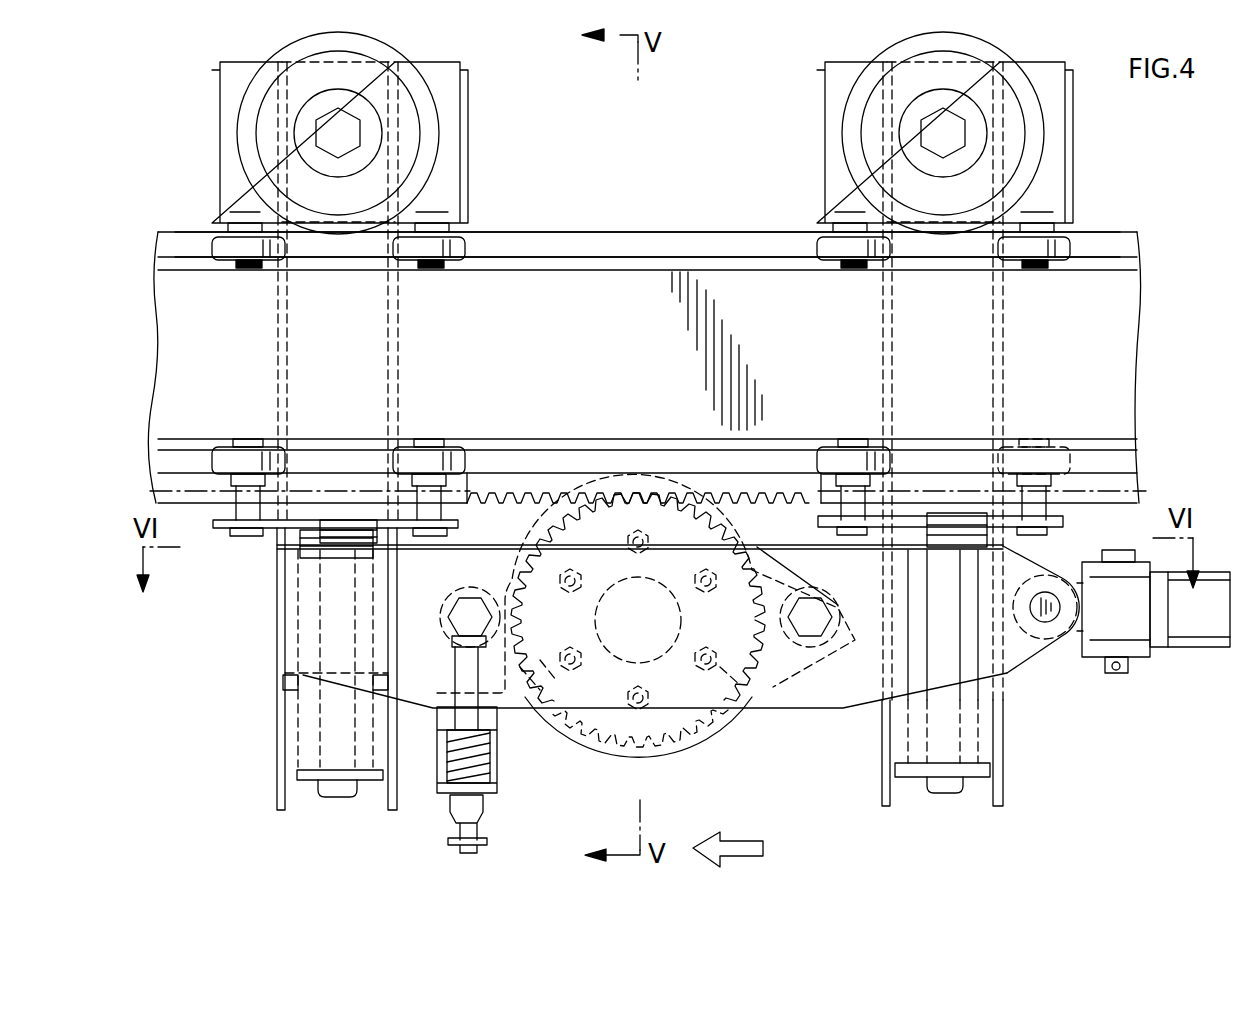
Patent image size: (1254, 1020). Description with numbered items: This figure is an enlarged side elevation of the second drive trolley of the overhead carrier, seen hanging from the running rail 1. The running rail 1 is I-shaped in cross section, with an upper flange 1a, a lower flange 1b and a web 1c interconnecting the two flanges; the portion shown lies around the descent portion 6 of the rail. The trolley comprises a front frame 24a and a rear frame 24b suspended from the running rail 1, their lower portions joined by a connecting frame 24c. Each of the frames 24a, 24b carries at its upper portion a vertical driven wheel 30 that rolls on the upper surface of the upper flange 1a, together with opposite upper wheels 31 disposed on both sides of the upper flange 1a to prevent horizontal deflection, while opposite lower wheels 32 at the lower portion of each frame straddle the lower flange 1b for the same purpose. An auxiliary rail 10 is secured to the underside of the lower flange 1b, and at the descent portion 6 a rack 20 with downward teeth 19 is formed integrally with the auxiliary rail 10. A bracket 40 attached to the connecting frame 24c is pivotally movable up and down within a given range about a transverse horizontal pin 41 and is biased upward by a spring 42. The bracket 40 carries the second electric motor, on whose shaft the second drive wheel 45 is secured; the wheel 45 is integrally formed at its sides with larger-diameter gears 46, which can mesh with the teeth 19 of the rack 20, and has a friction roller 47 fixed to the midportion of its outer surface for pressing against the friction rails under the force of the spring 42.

The running rail 1 is at (666, 339).
The upper flange 1a is at (1118, 238).
The lower flange 1b is at (1122, 457).
The web 1c is at (1127, 347).
The descent portion 6 is at (653, 367).
The auxiliary rail 10 is at (1116, 483).
The downward teeth 19 is at (643, 492).
The rack 20 is at (196, 507).
The front frame 24a is at (468, 97).
The rear frame 24b is at (1073, 115).
The connecting frame 24c is at (787, 700).
The vertical driven wheel 30 is at (433, 145).
The upper wheels 31 is at (228, 260).
The lower wheels 32 is at (220, 452).
The bracket 40 is at (497, 748).
The transverse horizontal pin 41 is at (828, 630).
The spring 42 is at (500, 776).
The second drive wheel 45 is at (550, 520).
The gears 46 is at (598, 490).
The friction roller 47 is at (728, 527).